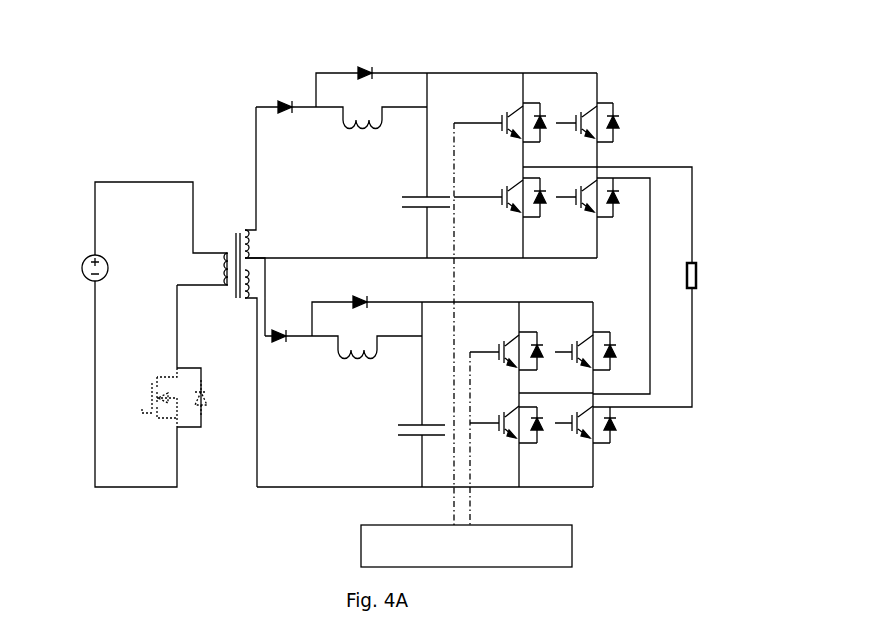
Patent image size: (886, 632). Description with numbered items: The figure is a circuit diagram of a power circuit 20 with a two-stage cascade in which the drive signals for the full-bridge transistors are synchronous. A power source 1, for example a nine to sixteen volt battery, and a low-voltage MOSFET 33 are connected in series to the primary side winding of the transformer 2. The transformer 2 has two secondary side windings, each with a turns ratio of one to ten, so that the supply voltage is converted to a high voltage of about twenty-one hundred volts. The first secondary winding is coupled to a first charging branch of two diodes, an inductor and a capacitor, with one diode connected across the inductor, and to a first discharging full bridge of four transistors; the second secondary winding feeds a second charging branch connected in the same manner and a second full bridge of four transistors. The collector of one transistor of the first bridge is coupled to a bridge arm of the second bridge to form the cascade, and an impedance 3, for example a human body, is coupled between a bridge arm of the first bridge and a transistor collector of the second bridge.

The power circuit 20 is at (230, 60).
The power source 1 is at (120, 334).
The transformer 2 is at (271, 297).
The impedance 3 is at (695, 287).
The low-voltage MOSFET 33 is at (194, 417).